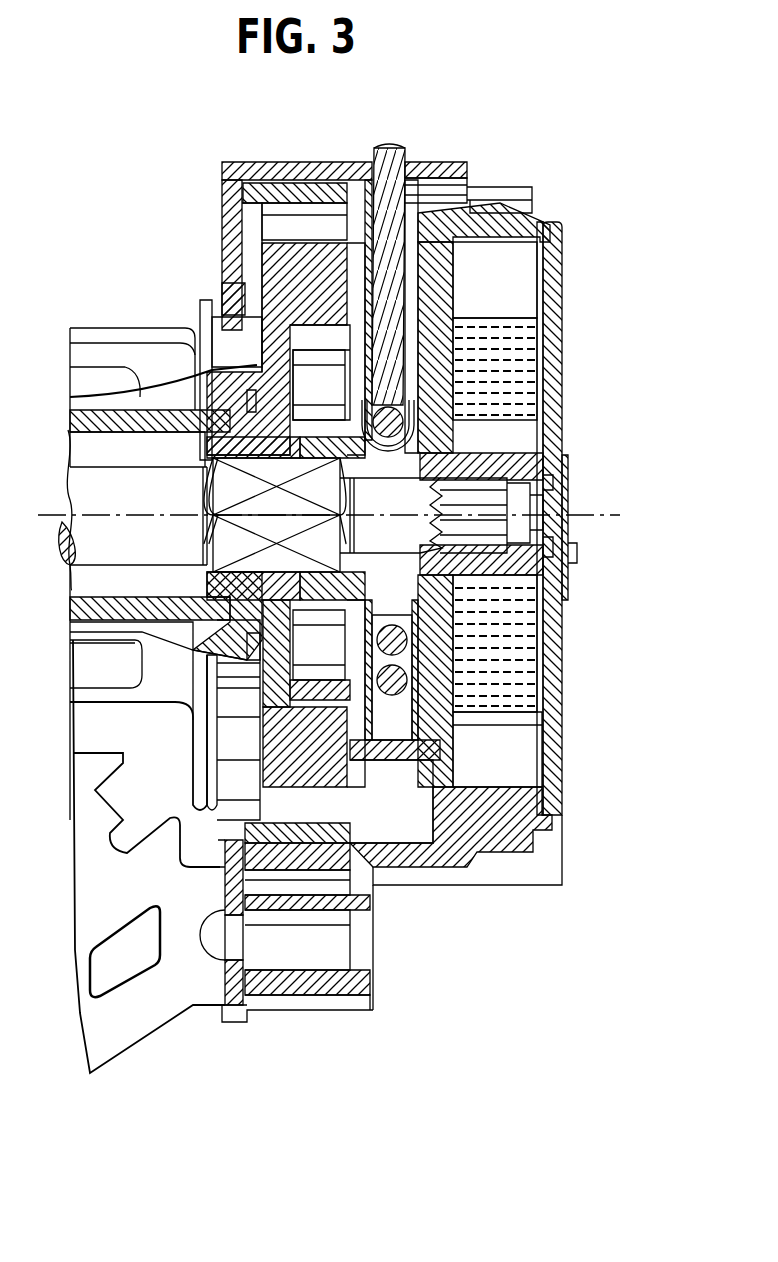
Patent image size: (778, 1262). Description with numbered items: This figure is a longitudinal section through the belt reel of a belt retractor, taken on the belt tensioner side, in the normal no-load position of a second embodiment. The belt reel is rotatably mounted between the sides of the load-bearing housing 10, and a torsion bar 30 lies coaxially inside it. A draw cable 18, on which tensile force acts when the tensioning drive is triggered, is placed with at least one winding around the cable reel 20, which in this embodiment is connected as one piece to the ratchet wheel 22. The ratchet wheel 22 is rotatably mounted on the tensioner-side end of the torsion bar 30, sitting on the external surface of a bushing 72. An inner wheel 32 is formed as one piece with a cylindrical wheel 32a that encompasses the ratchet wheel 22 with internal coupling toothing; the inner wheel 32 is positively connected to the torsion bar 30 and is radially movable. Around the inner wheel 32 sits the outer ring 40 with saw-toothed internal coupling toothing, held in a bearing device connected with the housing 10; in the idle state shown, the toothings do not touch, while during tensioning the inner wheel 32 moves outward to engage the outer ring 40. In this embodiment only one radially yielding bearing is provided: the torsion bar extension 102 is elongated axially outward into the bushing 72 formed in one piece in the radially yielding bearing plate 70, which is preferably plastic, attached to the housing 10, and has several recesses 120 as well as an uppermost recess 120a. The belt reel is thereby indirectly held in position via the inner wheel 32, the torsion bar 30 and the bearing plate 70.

The load-bearing housing 10 is at (162, 997).
The draw cable 18 is at (400, 193).
The cable reel 20 is at (415, 360).
The ratchet wheel 22 is at (260, 660).
The torsion bar 30 is at (95, 490).
The inner wheel 32 is at (267, 268).
The cylindrical wheel 32a is at (257, 430).
The outer ring 40 is at (297, 197).
The bearing plate 70 is at (453, 278).
The bushing 72 is at (568, 556).
The torsion bar extension 102 is at (553, 483).
The recesses 120 is at (453, 607).
The uppermost recess 120a is at (453, 417).